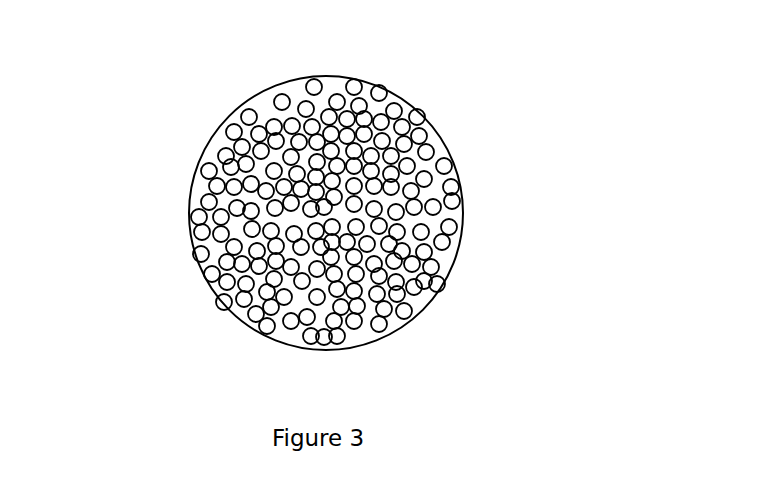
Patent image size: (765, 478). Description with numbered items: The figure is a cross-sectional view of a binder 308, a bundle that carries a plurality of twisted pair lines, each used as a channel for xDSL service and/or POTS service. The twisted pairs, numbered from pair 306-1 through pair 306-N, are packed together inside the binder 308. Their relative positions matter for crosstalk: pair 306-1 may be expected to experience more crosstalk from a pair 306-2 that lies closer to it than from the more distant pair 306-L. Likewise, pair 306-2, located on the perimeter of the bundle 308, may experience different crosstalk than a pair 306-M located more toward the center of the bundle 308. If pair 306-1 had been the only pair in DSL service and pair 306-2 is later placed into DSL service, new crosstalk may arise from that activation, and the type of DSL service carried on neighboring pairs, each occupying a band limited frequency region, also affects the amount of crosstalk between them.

The twisted pair 306-1 is at (379, 92).
The twisted pair 306-2 is at (392, 113).
The twisted pair 306-L is at (418, 210).
The twisted pair 306-M is at (250, 162).
The twisted pair 306-N is at (246, 290).
The binder 308 is at (467, 250).